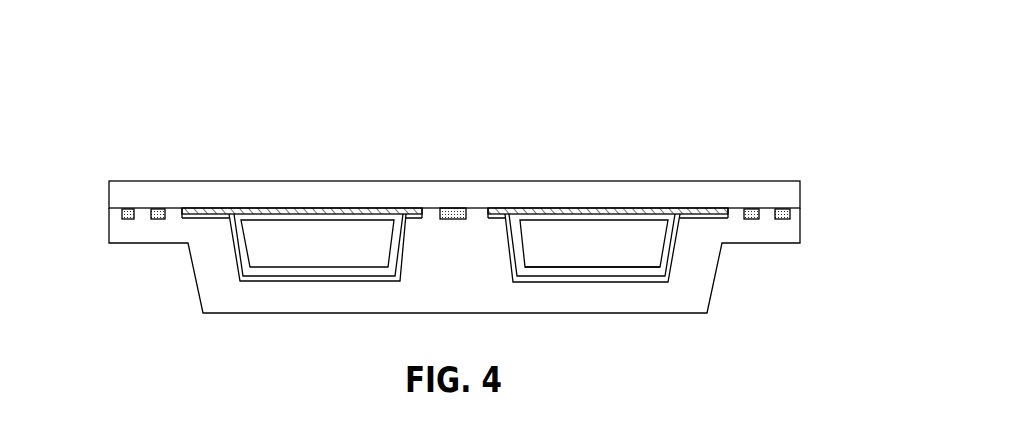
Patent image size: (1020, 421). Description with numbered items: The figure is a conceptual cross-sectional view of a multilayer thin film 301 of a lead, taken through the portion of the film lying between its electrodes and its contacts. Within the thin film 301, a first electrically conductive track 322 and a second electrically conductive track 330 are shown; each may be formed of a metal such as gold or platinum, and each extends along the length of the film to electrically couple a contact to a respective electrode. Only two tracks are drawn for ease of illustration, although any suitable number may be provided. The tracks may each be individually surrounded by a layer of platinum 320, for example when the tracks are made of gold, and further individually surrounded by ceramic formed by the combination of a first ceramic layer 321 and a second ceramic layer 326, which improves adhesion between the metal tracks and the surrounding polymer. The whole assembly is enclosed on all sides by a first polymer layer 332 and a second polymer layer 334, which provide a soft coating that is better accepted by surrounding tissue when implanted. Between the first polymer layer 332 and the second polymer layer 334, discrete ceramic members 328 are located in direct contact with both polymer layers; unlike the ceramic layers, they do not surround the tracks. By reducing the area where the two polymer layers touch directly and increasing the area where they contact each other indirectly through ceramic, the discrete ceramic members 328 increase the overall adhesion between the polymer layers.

The thin film 301 is at (254, 80).
The layer of platinum 320 is at (593, 214).
The first ceramic layer 321 is at (535, 208).
The first electrically conductive track 322 is at (265, 254).
The second ceramic layer 326 is at (337, 283).
The discrete ceramic member 328 is at (158, 209).
The second electrically conductive track 330 is at (647, 262).
The first polymer layer 332 is at (108, 200).
The second polymer layer 334 is at (802, 228).